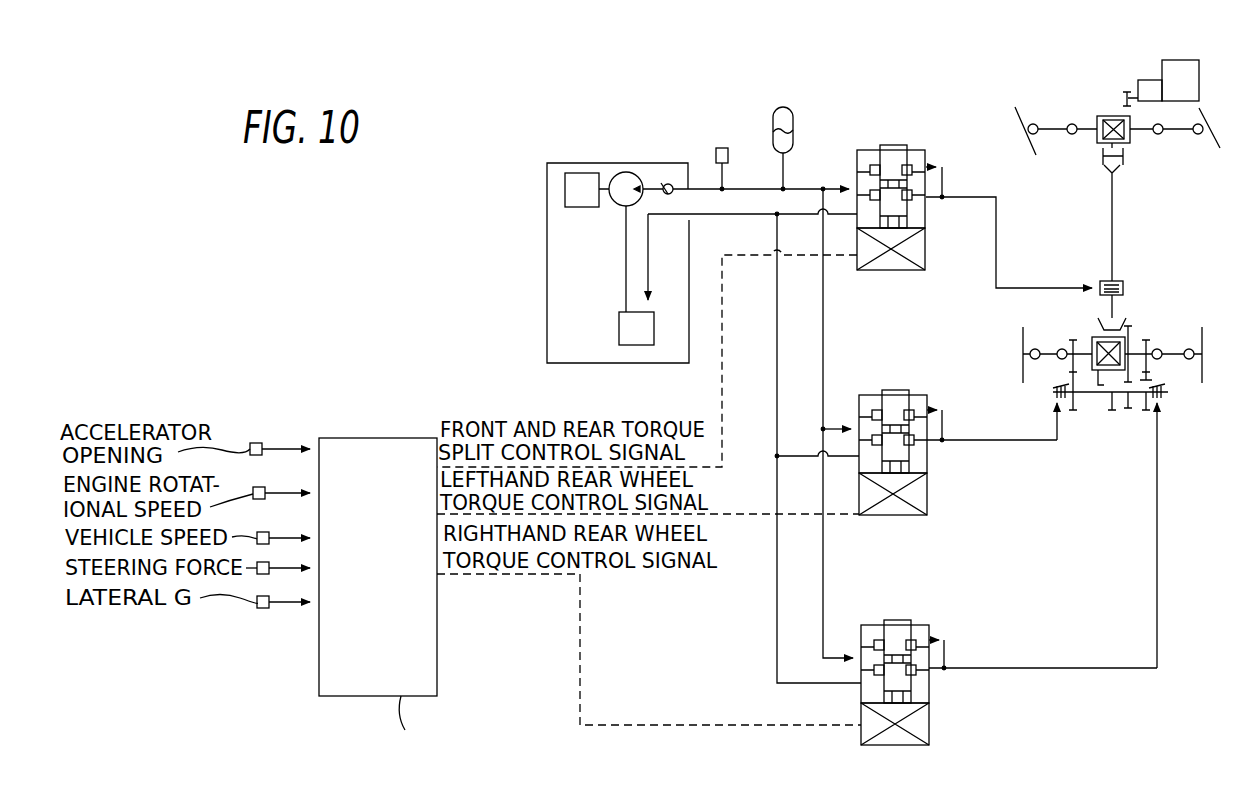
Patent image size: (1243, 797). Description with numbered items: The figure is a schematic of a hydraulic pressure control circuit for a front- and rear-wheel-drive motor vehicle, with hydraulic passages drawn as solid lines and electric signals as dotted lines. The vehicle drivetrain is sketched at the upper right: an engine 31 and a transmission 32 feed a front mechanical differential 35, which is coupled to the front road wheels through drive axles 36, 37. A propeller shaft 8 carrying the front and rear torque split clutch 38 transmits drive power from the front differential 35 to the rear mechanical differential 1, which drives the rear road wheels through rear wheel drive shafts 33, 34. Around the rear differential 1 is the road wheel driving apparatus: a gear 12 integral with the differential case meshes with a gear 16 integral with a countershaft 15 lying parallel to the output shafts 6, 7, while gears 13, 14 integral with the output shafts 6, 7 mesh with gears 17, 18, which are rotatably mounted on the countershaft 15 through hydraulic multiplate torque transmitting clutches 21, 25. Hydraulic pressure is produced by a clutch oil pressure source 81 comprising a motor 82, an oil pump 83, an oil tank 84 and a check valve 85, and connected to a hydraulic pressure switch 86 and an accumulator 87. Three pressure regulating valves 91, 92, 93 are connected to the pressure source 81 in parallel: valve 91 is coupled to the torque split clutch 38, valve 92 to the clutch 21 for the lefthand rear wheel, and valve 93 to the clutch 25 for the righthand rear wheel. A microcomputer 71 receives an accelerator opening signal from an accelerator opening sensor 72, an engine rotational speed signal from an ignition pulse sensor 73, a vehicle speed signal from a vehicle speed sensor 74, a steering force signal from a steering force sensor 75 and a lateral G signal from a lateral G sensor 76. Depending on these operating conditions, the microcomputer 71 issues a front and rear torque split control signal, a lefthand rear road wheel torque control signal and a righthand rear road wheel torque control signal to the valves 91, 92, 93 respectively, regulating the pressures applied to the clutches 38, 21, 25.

The mechanical differential 1 is at (1089, 328).
The output shaft 6 is at (1075, 396).
The output shaft 7 is at (1151, 366).
The power transmitting shaft 8 is at (1115, 313).
The gear 12 is at (1128, 337).
The gear 13 is at (1072, 338).
The gear 14 is at (1150, 340).
The countershaft 15 is at (1111, 408).
The gear 16 is at (1128, 412).
The gear 17 is at (1073, 418).
The gear 18 is at (1147, 410).
The torque transmitting clutch 21 is at (1056, 397).
The torque transmitting clutch 25 is at (1168, 402).
The engine 31 is at (1177, 60).
The transmission 32 is at (1147, 80).
The rear wheel drive shaft 33 is at (1056, 357).
The rear wheel drive shaft 34 is at (1177, 350).
The mechanical differential 35 is at (1104, 110).
The drive axle 36 is at (1056, 130).
The drive axle 37 is at (1178, 130).
The front and rear torque split clutch 38 is at (1102, 276).
The microcomputer 71 is at (371, 696).
The accelerator opening sensor 72 is at (256, 443).
The ignition pulse sensor 73 is at (259, 487).
The vehicle speed sensor 74 is at (262, 532).
The steering force sensor 75 is at (262, 562).
The lateral G sensor 76 is at (262, 596).
The clutch oil pressure source 81 is at (547, 263).
The motor 82 is at (576, 173).
The oil pump 83 is at (626, 172).
The oil tank 84 is at (637, 345).
The check valve 85 is at (668, 183).
The hydraulic pressure switch 86 is at (722, 148).
The accumulator 87 is at (783, 107).
The pressure regulating valve 91 is at (899, 142).
The pressure regulating valve 92 is at (899, 388).
The pressure regulating valve 93 is at (914, 619).